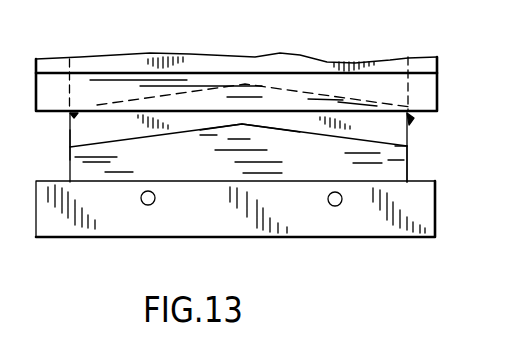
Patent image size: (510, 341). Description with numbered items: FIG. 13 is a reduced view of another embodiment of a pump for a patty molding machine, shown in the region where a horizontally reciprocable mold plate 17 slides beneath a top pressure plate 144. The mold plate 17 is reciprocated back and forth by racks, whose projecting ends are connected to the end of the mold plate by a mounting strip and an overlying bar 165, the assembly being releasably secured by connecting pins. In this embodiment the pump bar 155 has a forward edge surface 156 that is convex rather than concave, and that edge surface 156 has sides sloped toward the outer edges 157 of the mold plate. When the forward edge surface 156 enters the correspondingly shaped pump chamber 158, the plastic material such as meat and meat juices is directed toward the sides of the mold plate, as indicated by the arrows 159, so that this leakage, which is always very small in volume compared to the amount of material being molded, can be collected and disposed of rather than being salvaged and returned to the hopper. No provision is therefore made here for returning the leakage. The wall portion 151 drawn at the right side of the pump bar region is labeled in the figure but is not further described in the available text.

The pressure plate 144 is at (430, 93).
The side wall of wedge block 151 is at (408, 148).
The pump bar 155 is at (183, 169).
The forward surface 156 is at (312, 135).
The outer edges 157 is at (70, 140).
The pump chamber 158 is at (283, 100).
The arrows 159 is at (75, 114).
The bar 165 is at (370, 231).
The mold plate 17 is at (405, 137).